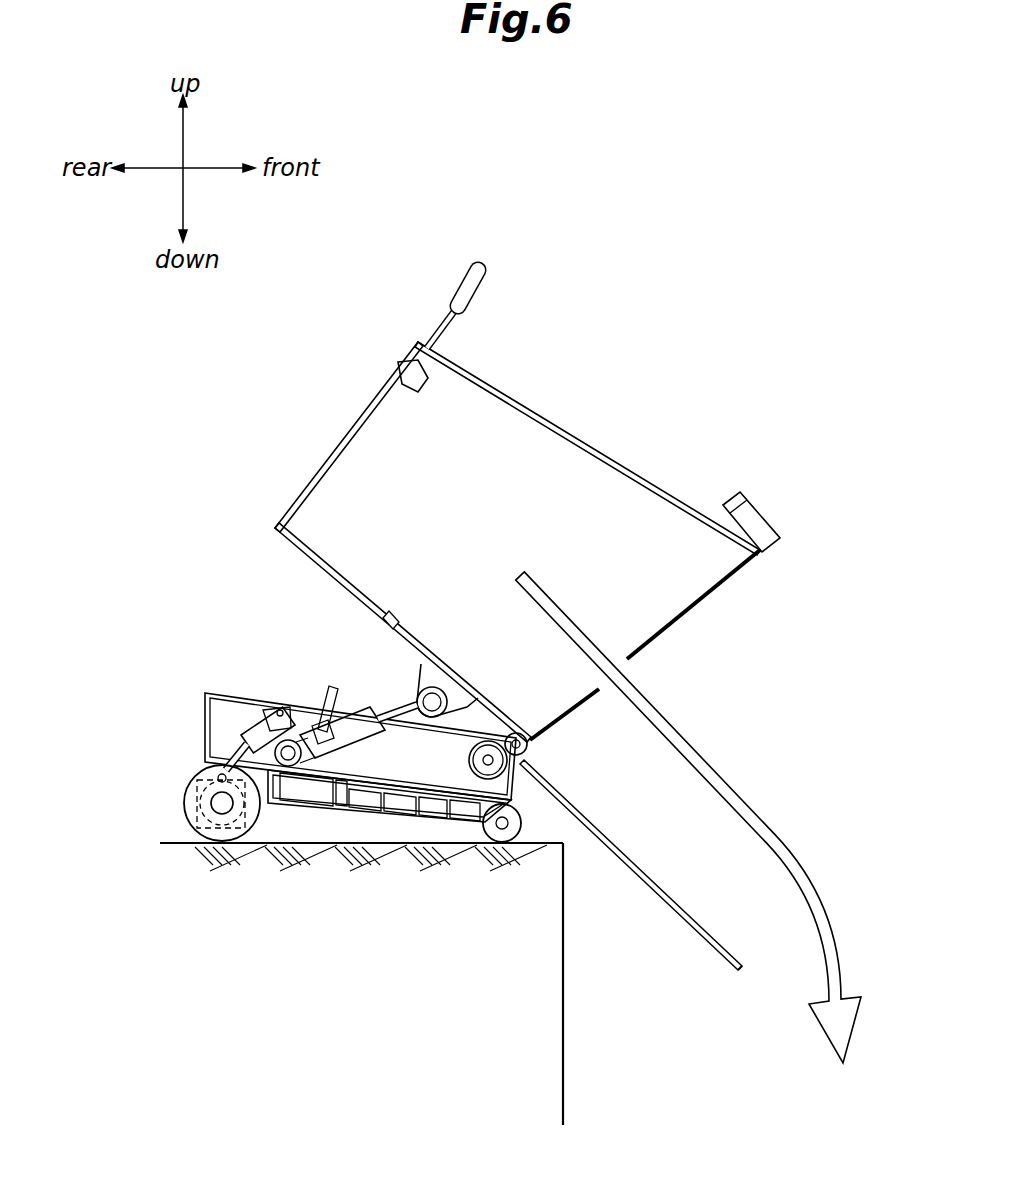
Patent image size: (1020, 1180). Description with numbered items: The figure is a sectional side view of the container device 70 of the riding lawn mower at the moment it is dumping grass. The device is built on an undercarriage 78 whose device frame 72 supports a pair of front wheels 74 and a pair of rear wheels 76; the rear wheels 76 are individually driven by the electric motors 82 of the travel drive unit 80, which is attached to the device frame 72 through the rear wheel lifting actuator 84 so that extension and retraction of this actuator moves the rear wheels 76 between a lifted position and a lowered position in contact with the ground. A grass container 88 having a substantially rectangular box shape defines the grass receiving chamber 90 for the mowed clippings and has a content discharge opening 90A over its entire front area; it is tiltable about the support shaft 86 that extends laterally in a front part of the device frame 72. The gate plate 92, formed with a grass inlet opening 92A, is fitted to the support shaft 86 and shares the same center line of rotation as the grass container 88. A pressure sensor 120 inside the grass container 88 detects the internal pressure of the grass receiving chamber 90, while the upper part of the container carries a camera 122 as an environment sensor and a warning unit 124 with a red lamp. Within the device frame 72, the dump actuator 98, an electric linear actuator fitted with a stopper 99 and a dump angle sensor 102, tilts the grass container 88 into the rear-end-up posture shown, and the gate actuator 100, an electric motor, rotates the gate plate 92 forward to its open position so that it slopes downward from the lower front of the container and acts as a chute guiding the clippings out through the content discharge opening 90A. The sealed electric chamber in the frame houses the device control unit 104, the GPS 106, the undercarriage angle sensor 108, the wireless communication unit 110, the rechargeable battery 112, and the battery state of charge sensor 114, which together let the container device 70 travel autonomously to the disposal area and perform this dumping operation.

The container device 70 is at (564, 483).
The device frame 72 is at (228, 697).
The front wheels 74 is at (522, 828).
The rear wheels 76 is at (240, 844).
The undercarriage 78 is at (200, 751).
The travel drive unit 80 is at (203, 798).
The electric motors 82 is at (203, 818).
The rear wheel lifting actuator 84 is at (262, 733).
The support shaft 86 is at (530, 745).
The grass container 88 is at (524, 402).
The grass receiving chamber 90 is at (506, 541).
The content discharge opening 90A is at (703, 602).
The gate plate 92 is at (585, 828).
The grass inlet opening 92A is at (673, 905).
The dump actuator 98 is at (360, 717).
The stopper 99 is at (330, 685).
The gate actuator 100 is at (520, 765).
The dump angle sensor 102 is at (312, 720).
The device control unit 104 is at (362, 812).
The GPS 106 is at (386, 816).
The undercarriage angle sensor 108 is at (436, 820).
The wireless communication unit 110 is at (466, 822).
The battery 112 is at (300, 802).
The battery state of charge sensor 114 is at (330, 808).
The pressure sensor 120 is at (427, 382).
The camera 122 is at (765, 517).
The warning unit 124 is at (462, 290).